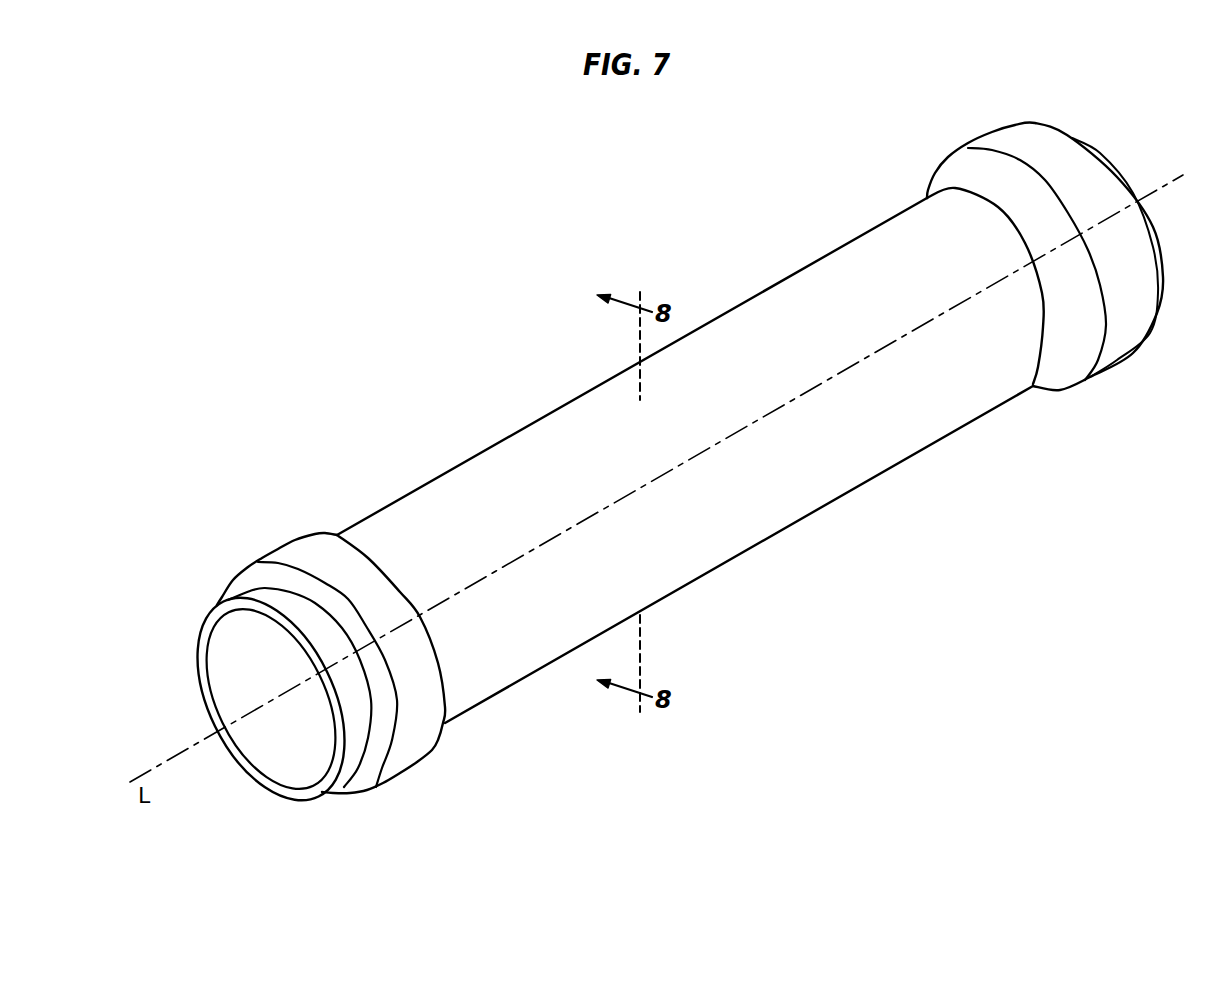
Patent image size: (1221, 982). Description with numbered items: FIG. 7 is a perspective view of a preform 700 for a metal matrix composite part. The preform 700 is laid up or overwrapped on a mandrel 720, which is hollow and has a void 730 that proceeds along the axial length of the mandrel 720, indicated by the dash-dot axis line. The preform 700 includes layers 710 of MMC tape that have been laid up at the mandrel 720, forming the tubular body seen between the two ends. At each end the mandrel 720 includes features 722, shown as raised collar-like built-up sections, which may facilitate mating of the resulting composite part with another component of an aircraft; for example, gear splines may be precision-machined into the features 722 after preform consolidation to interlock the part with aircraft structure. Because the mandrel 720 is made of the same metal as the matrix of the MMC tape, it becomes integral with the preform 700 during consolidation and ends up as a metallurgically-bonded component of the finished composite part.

The preform 700 is at (642, 444).
The layers of MMC tape 710 is at (835, 502).
The mandrel 720 is at (203, 641).
The features 722 is at (1008, 122).
The void 730 is at (268, 752).